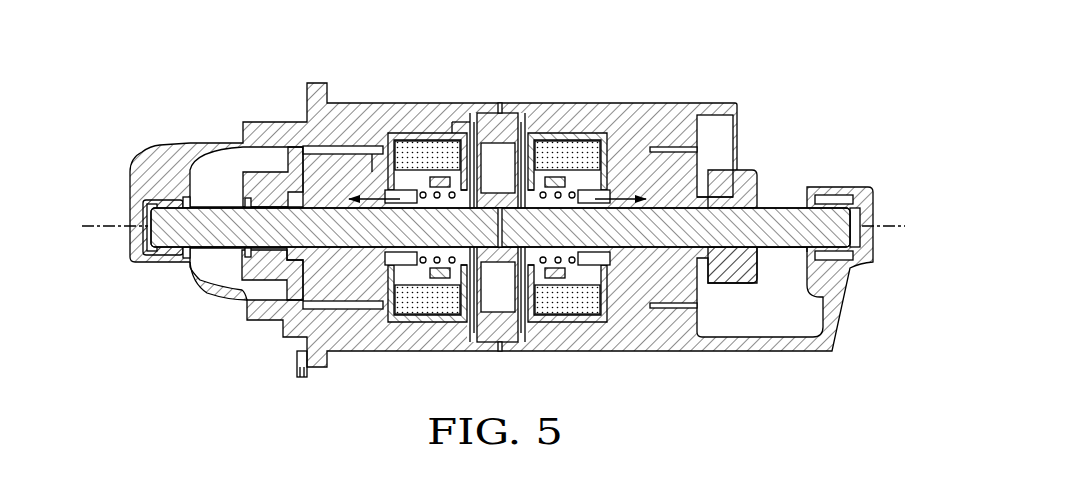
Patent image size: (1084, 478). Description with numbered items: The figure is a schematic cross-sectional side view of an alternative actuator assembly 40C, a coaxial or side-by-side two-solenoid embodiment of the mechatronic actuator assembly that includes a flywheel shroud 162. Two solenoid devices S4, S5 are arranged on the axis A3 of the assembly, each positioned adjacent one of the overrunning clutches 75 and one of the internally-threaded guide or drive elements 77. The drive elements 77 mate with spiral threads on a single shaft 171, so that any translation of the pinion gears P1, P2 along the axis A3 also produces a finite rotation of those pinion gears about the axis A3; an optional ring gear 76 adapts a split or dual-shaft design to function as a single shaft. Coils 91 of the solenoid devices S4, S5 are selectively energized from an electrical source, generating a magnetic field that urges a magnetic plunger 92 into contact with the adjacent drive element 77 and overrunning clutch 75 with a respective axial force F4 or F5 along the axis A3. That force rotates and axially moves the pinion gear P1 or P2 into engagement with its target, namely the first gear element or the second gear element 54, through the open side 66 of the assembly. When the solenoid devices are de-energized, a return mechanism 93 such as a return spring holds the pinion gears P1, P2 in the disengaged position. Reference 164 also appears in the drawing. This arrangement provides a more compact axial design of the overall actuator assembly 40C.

The actuator assembly 40C is at (505, 217).
The flywheel shroud 162 is at (157, 172).
The pinion gear P2 is at (265, 192).
The overrunning clutch 75 is at (343, 157).
The guide element 77 is at (377, 170).
The magnetic plunger 92 is at (410, 187).
The second gear element 54 is at (448, 140).
The ring gear 76 is at (532, 122).
The pinion gear P1 is at (730, 190).
The open side 66 is at (795, 168).
The axis A3 is at (84, 226).
The axial force F4 is at (378, 197).
The axial force F5 is at (625, 197).
The solenoid device S4 is at (431, 153).
The solenoid device S5 is at (573, 153).
The shaft 171 is at (172, 230).
The coils 91 is at (425, 303).
The return mechanism 93 is at (460, 258).
The end wall 164 is at (824, 340).